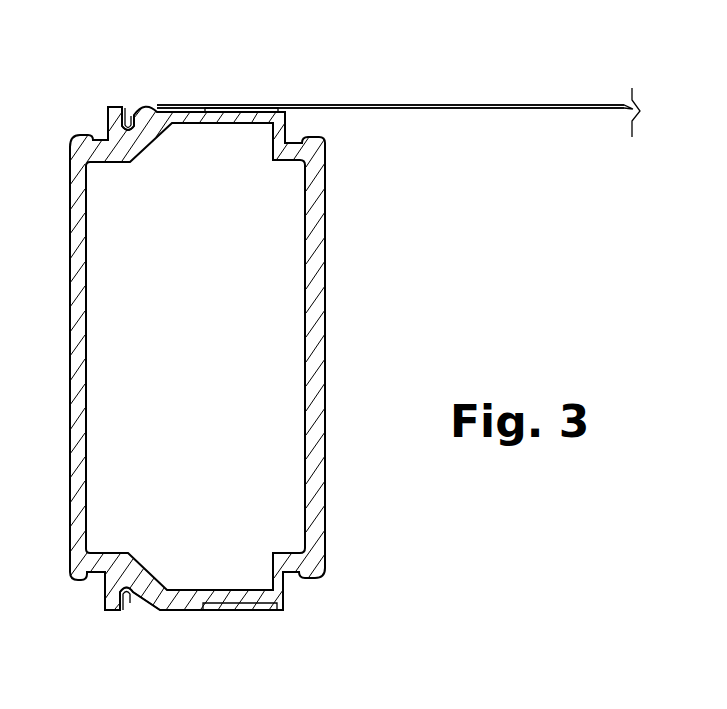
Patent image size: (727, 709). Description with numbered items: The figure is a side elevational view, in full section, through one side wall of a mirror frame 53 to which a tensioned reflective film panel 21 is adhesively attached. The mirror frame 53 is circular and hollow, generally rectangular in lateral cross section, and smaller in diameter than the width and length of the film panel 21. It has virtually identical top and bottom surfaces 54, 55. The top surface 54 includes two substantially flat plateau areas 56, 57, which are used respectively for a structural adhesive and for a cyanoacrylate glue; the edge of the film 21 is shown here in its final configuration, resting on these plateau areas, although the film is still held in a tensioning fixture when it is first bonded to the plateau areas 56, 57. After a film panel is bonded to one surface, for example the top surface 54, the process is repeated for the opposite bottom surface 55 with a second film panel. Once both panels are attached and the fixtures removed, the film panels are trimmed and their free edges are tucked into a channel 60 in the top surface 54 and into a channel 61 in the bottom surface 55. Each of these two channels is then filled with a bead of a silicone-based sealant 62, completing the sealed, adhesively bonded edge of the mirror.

The mirror frame 53 is at (55, 476).
The film panel 21 is at (468, 110).
The top surface 54 is at (317, 94).
The bottom surface 55 is at (237, 621).
The plateau area 56 is at (243, 110).
The plateau area 57 is at (175, 108).
The channel 60 is at (141, 108).
The channel 61 is at (128, 591).
The silicone-based sealant 62 is at (139, 111).